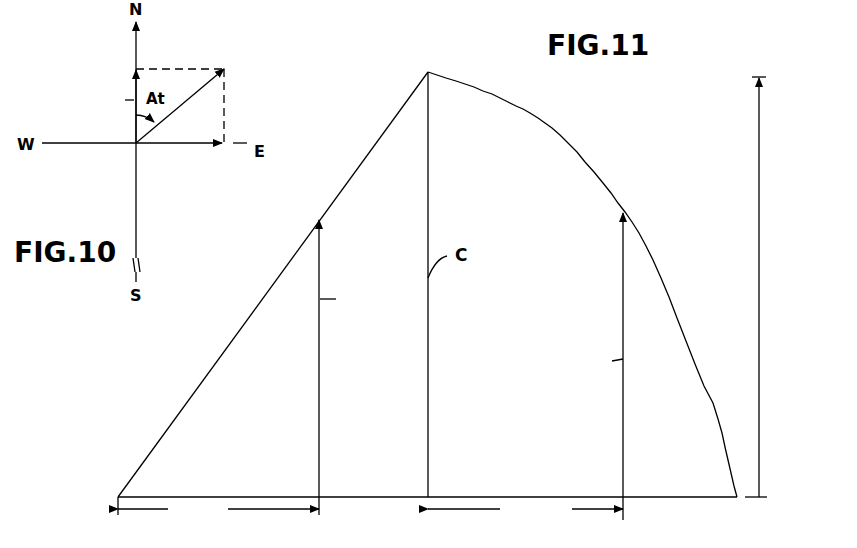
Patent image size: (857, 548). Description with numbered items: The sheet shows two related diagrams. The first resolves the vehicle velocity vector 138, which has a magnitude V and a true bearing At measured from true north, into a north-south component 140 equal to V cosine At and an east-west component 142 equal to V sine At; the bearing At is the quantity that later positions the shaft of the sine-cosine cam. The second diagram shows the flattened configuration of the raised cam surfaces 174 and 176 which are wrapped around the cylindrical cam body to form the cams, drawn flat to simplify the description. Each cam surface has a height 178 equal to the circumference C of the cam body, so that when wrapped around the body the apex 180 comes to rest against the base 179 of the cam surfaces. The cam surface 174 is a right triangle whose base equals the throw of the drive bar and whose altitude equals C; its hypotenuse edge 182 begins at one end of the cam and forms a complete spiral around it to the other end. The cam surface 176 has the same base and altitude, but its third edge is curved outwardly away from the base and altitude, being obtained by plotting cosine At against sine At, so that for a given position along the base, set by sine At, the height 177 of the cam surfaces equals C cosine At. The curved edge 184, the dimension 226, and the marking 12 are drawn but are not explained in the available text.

In FIG. 10, the vehicle velocity vector 138 is at (207, 86).
In FIG. 10, the north-south component 140 is at (136, 78).
In FIG. 10, the east-west component 142 is at (208, 147).
In FIG. 11, the raised cam surface 174 is at (265, 423).
In FIG. 11, the raised cam surface 176 is at (530, 313).
In FIG. 11, the height of the cam surfaces 177 is at (623, 432).
In FIG. 11, the height 178 is at (760, 247).
In FIG. 11, the base of the cam surfaces 179 is at (383, 499).
In FIG. 11, the apex 180 is at (428, 72).
In FIG. 11, the hypotenuse edge 182 is at (364, 162).
In FIG. 11, the curved line 184 is at (597, 172).
In FIG. 11, the sin At dimension 226 is at (222, 524).
In FIG. 11, the sheet numeral 12 is at (782, 543).